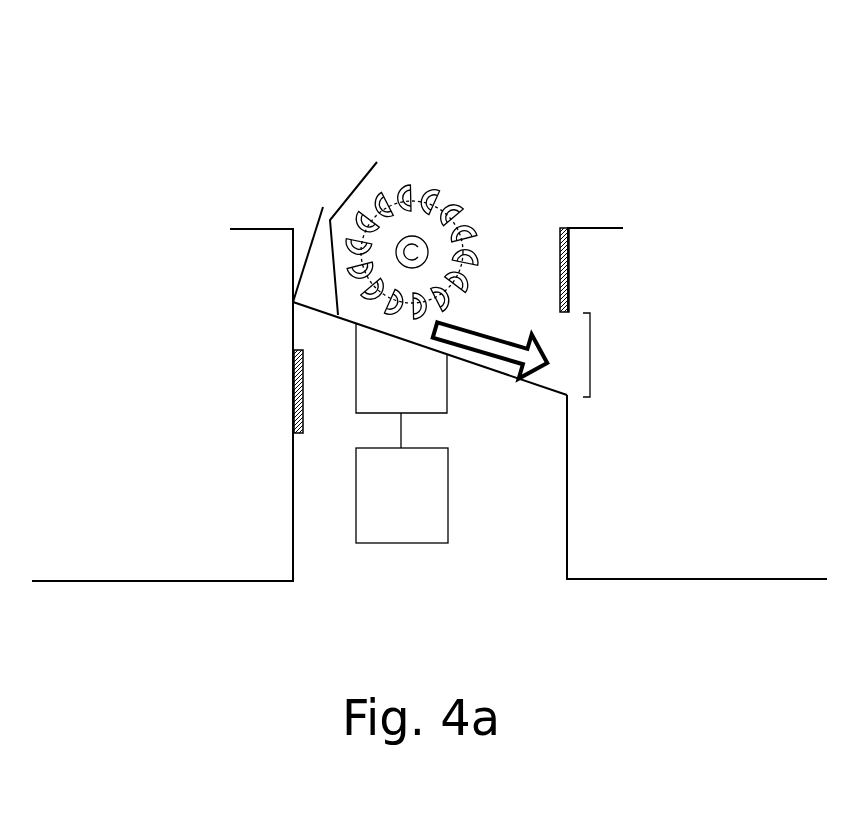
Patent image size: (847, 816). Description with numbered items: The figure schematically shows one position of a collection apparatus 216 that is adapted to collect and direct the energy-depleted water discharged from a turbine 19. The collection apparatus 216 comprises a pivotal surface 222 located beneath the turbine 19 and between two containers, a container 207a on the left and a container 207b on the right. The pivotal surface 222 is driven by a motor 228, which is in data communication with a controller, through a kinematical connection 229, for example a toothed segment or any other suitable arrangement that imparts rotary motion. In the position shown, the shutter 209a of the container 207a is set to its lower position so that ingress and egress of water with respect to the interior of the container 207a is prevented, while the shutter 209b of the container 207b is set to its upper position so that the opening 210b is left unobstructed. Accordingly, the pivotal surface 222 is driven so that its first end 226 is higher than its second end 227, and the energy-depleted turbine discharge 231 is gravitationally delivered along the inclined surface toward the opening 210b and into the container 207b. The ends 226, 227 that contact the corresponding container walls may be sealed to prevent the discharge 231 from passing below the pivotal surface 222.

The turbine 19 is at (434, 228).
The container 207a is at (263, 530).
The container 207b is at (583, 505).
The shutter 209a is at (350, 485).
The shutter 209b is at (558, 243).
The opening 210b is at (590, 350).
The collection apparatus 216 is at (356, 108).
The pivotal surface 222 is at (379, 227).
The first end 226 is at (291, 231).
The second end 227 is at (565, 397).
The motor 228 is at (447, 497).
The kinematical connection 229 is at (433, 377).
The turbine discharge 231 is at (503, 333).